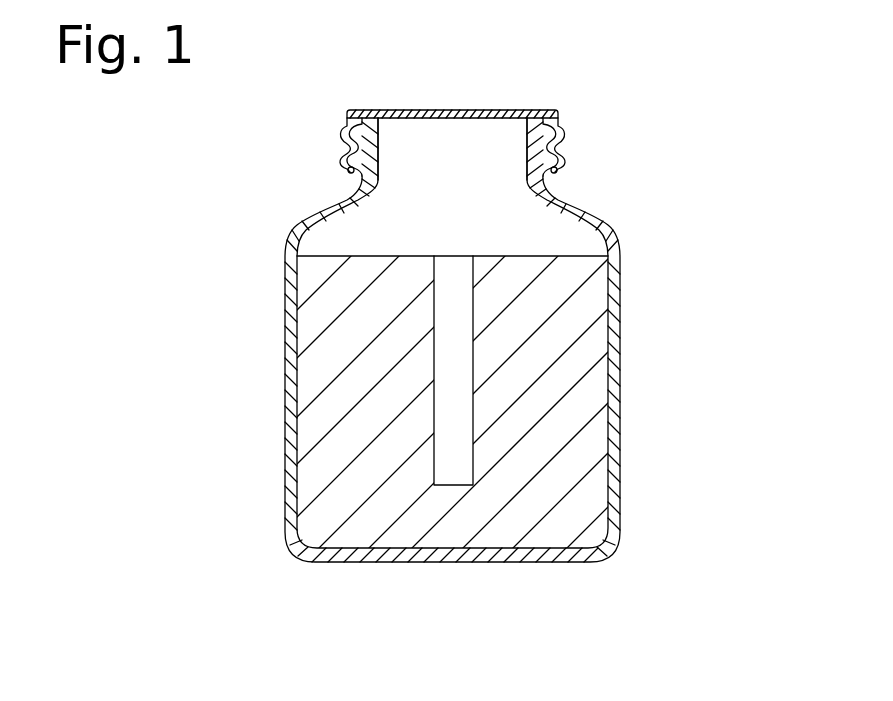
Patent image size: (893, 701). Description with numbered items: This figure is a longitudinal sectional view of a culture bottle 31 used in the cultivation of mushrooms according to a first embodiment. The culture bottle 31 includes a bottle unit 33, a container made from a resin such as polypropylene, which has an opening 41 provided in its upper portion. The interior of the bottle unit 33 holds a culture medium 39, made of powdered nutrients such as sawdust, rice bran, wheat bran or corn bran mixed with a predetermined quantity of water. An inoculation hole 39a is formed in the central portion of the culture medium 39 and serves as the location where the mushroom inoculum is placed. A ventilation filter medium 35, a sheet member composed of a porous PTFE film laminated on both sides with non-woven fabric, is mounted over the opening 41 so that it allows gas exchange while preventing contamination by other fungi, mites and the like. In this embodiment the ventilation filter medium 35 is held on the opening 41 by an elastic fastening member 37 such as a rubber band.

The culture bottle 31 is at (684, 99).
The bottle unit 33 is at (621, 460).
The ventilation filter medium 35 is at (493, 100).
The elastic fastening member 37 is at (352, 172).
The culture medium 39 is at (583, 354).
The inoculation hole 39a is at (436, 452).
The opening 41 is at (379, 148).